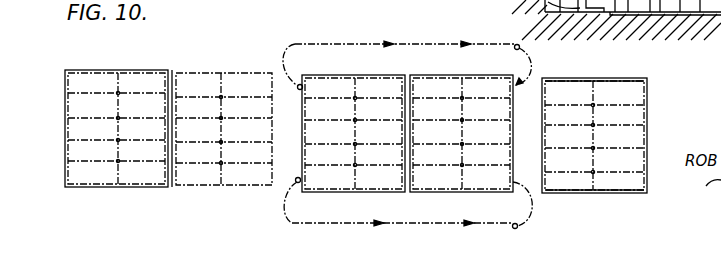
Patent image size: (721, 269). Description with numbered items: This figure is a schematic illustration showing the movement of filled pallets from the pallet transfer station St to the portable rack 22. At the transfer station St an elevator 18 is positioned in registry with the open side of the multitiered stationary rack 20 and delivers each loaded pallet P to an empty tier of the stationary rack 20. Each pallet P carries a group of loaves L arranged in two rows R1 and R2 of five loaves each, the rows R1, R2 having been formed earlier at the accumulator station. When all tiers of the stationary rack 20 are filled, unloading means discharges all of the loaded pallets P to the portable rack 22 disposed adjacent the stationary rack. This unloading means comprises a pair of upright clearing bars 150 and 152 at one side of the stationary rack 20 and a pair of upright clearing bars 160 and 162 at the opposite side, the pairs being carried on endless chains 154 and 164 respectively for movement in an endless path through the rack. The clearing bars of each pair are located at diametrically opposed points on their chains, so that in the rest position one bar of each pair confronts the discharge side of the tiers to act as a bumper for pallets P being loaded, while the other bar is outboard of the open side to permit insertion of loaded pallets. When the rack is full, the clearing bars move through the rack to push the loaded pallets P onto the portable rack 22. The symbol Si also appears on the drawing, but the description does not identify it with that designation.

The portable rack 22 is at (149, 64).
The pallet P is at (66, 122).
The loaves L is at (130, 78).
The stationary rack 20 is at (329, 67).
The switch Si is at (340, 193).
The endless chain 164 is at (346, 44).
The endless chain 154 is at (445, 224).
The upright clearing bar 162 is at (300, 89).
The upright clearing bar 152 is at (298, 178).
The upright clearing bar 160 is at (515, 45).
The upright clearing bar 150 is at (518, 228).
The elevator 18 is at (656, 97).
The pallet transfer station St is at (620, 82).
The row R2 is at (570, 180).
The row R1 is at (617, 180).